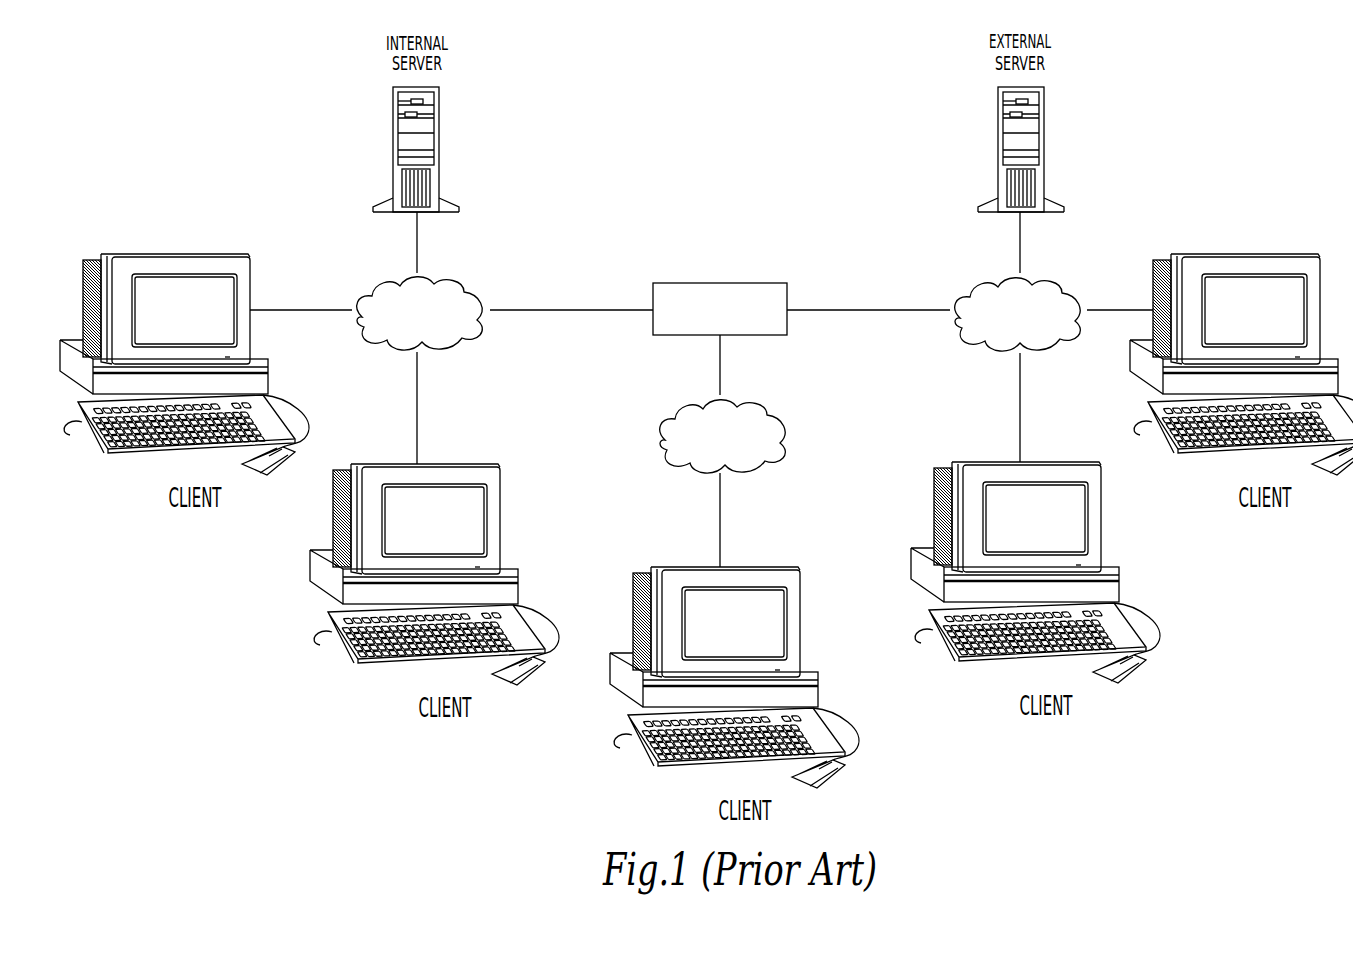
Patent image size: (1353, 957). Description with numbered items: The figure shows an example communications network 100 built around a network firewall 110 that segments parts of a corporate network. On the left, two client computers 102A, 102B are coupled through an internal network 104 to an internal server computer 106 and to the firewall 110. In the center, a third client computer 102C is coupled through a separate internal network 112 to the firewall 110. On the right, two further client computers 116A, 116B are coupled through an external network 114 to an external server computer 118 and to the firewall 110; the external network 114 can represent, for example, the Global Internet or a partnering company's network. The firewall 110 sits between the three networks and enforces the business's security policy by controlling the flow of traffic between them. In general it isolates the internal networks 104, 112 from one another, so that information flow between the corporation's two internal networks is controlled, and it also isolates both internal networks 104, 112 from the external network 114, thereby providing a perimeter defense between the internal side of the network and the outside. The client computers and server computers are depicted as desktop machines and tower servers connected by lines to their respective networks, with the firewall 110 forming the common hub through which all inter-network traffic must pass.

The communications network 100 is at (1270, 92).
The client computer 102A is at (434, 593).
The client computer 102B is at (163, 256).
The client computer 102C is at (734, 696).
The internal network 104 is at (468, 281).
The internal server computer 106 is at (430, 149).
The firewall 110 is at (767, 283).
The internal network 112 is at (775, 403).
The external network 114 is at (1080, 278).
The client computer 116A is at (1035, 591).
The client computer 116B is at (1233, 256).
The external server computer 118 is at (1035, 149).